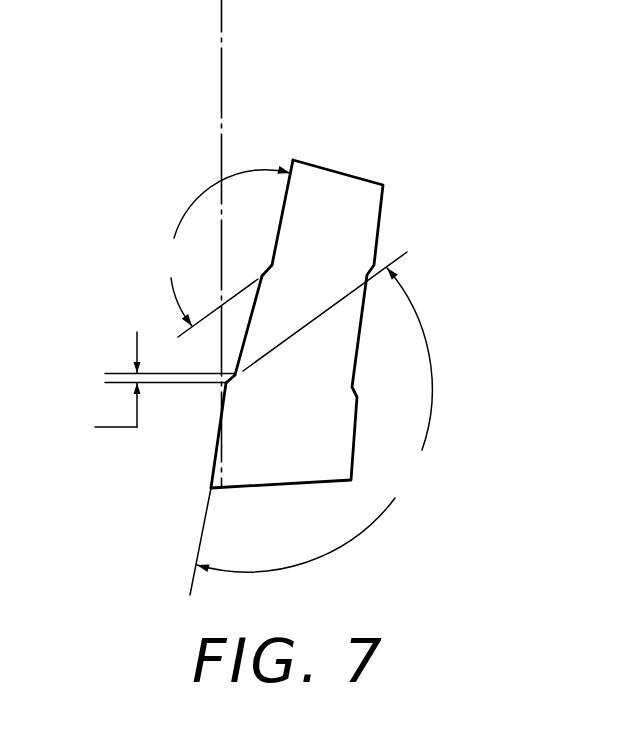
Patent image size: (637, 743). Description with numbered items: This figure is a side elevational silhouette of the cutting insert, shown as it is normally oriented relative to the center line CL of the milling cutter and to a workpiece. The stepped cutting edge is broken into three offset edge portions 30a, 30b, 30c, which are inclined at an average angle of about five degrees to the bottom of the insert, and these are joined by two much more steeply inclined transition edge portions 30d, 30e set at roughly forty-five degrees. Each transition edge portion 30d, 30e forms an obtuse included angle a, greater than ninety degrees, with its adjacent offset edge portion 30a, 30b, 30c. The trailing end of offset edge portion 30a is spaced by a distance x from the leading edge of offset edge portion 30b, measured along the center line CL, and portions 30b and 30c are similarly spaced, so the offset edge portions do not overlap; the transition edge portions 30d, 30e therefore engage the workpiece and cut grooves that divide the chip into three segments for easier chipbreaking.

The offset edge portion 30a is at (215, 460).
The offset edge portion 30b is at (258, 298).
The offset edge portion 30c is at (285, 200).
The transition edge portion 30d is at (229, 381).
The transition edge portion 30e is at (270, 268).
The center line CL is at (220, 98).
The included angle a is at (298, 369).
The distance x is at (154, 384).